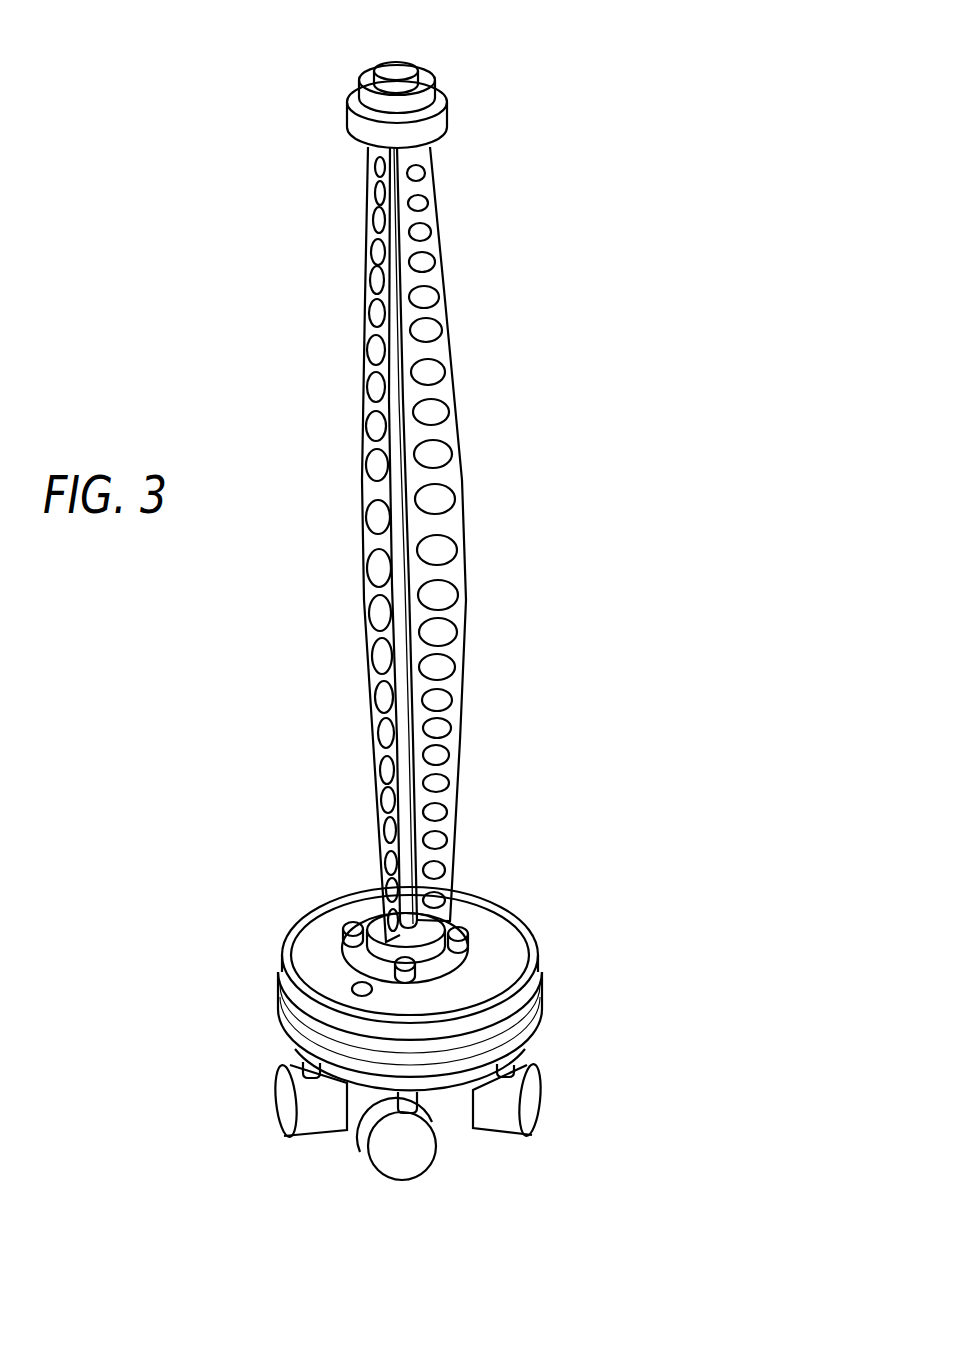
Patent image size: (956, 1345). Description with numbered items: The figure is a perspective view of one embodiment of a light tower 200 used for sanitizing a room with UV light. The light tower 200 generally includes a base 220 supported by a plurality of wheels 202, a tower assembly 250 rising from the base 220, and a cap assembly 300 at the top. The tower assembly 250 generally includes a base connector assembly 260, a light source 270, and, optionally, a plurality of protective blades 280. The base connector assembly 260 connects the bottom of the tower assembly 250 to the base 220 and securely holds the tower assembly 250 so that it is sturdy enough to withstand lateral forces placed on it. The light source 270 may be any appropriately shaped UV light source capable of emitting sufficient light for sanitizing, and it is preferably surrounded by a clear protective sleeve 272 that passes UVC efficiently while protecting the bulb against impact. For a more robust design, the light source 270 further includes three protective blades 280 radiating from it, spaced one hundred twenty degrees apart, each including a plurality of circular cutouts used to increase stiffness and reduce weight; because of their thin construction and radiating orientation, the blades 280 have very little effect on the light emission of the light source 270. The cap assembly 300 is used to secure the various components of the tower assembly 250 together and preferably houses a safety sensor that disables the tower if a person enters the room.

The light tower 200 is at (583, 350).
The wheels 202 is at (279, 1110).
The base 220 is at (481, 890).
The tower assembly 250 is at (465, 580).
The base connector assembly 260 is at (375, 903).
The light source 270 is at (398, 340).
The protective sleeve 272 is at (378, 297).
The protective blades 280 is at (363, 428).
The cap assembly 300 is at (425, 70).